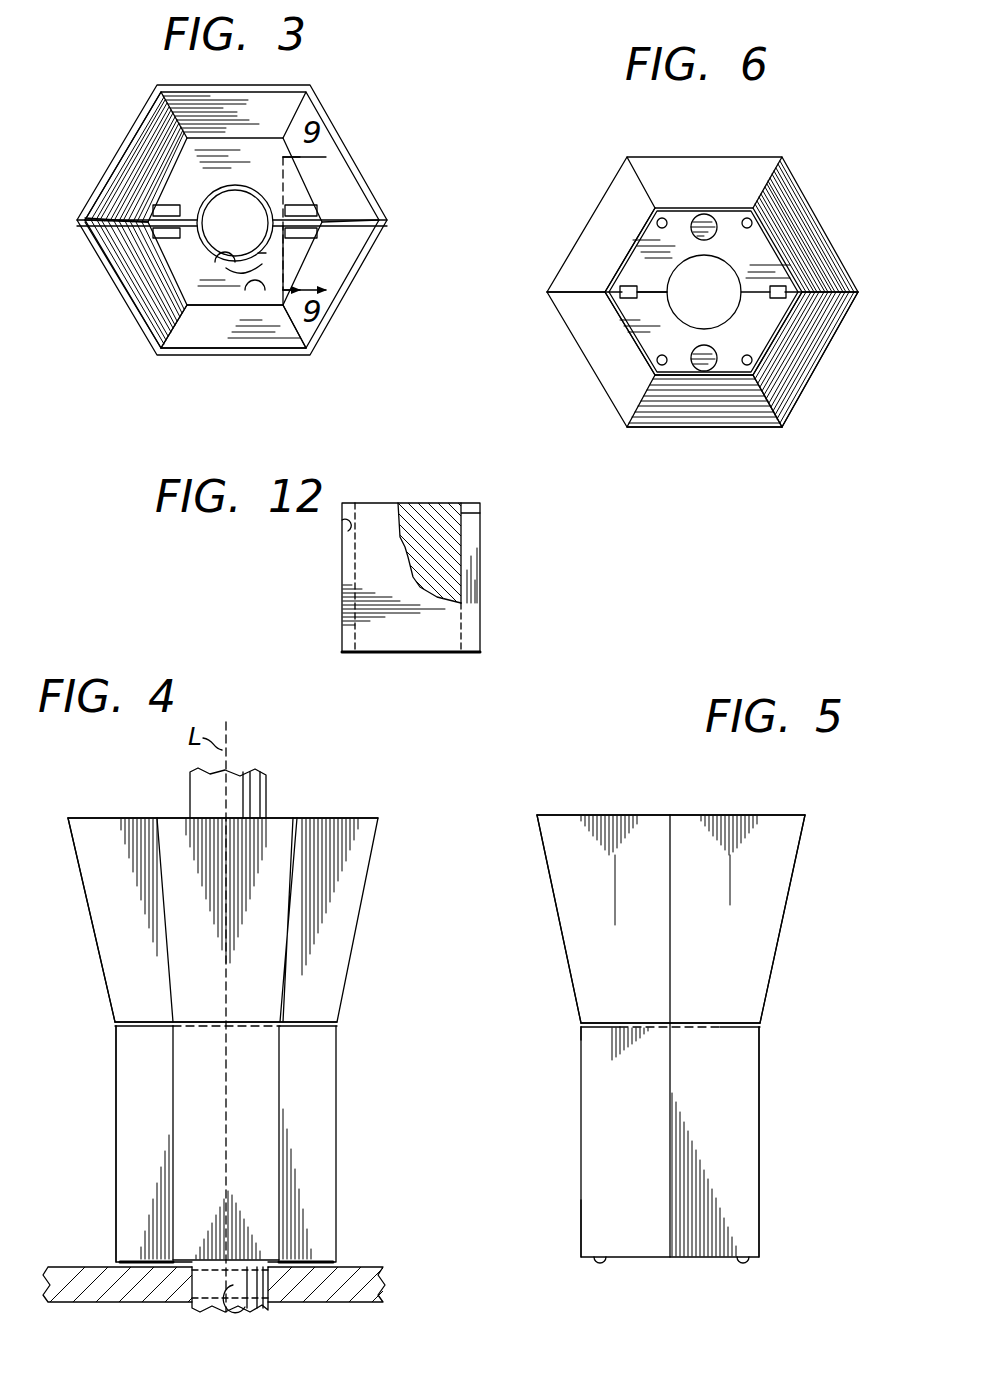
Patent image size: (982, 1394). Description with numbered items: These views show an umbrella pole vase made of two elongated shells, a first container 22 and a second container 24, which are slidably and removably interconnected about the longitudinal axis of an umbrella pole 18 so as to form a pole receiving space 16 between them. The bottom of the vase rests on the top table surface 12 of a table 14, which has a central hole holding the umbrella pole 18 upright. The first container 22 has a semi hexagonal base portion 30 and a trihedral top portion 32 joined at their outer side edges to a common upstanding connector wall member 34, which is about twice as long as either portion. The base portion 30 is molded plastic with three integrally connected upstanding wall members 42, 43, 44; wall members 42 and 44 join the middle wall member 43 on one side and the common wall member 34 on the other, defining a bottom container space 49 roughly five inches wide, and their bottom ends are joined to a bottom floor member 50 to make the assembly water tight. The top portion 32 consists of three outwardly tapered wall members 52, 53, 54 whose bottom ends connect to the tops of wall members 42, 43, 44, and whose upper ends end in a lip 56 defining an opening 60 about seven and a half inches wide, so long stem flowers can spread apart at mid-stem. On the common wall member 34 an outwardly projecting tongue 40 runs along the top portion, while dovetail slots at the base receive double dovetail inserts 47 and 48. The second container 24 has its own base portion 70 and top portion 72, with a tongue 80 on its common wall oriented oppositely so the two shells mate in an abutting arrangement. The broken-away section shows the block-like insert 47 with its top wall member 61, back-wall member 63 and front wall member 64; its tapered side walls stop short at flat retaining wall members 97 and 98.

In FIG. 4, the top table surface 12 is at (368, 1275).
In FIG. 4, the table 14 is at (85, 1277).
In FIG. 4, the pole receiving space 16 is at (240, 1300).
In FIG. 4, the umbrella pole 18 is at (265, 795).
In FIG. 3, the first elongated container 22 is at (332, 338).
In FIG. 6, the first elongated container 22 is at (770, 452).
In FIG. 4, the first elongated container 22 is at (357, 1005).
In FIG. 5, the first elongated container 22 is at (558, 972).
In FIG. 3, the second elongated container 24 is at (140, 85).
In FIG. 6, the second elongated container 24 is at (590, 185).
In FIG. 5, the second elongated container 24 is at (810, 822).
In FIG. 6, the semi hexagonal base portion 30 is at (800, 318).
In FIG. 4, the semi hexagonal base portion 30 is at (348, 1085).
In FIG. 5, the semi hexagonal base portion 30 is at (580, 1157).
In FIG. 3, the trihedral top portion 32 is at (115, 332).
In FIG. 6, the trihedral top portion 32 is at (545, 315).
In FIG. 4, the trihedral top portion 32 is at (368, 912).
In FIG. 5, the trihedral top portion 32 is at (548, 910).
In FIG. 3, the common upstanding connector wall member 34 is at (98, 215).
In FIG. 3, the elongated outwardly projecting tongue 40 is at (305, 210).
In FIG. 3, the upstanding wall member 42 is at (175, 275).
In FIG. 6, the upstanding wall member 42 is at (612, 315).
In FIG. 4, the upstanding wall member 42 is at (133, 1157).
In FIG. 3, the upstanding wall member 43 is at (240, 300).
In FIG. 6, the upstanding wall member 43 is at (665, 380).
In FIG. 4, the upstanding wall member 43 is at (190, 1057).
In FIG. 3, the upstanding wall member 44 is at (300, 245).
In FIG. 6, the upstanding wall member 44 is at (770, 360).
In FIG. 4, the upstanding wall member 44 is at (322, 1138).
In FIG. 5, the upstanding wall member 44 is at (605, 1226).
In FIG. 6, the double dovetail insert 47 is at (625, 285).
In FIG. 12, the double dovetail insert 47 is at (410, 660).
In FIG. 6, the double dovetail insert 48 is at (782, 282).
In FIG. 3, the bottom container space 49 is at (235, 223).
In FIG. 3, the bottom floor member 50 is at (330, 250).
In FIG. 3, the outwardly tapered wall member 52 is at (120, 250).
In FIG. 6, the outwardly tapered wall member 52 is at (602, 365).
In FIG. 4, the outwardly tapered wall member 52 is at (127, 958).
In FIG. 3, the outwardly tapered wall member 53 is at (185, 335).
In FIG. 6, the outwardly tapered wall member 53 is at (715, 405).
In FIG. 4, the outwardly tapered wall member 53 is at (180, 873).
In FIG. 3, the outwardly tapered wall member 54 is at (300, 340).
In FIG. 6, the outwardly tapered wall member 54 is at (790, 330).
In FIG. 4, the outwardly tapered wall member 54 is at (365, 815).
In FIG. 5, the outwardly tapered wall member 54 is at (593, 995).
In FIG. 3, the lip 56 is at (258, 356).
In FIG. 4, the lip 56 is at (105, 815).
In FIG. 5, the lip 56 is at (557, 815).
In FIG. 5, the opening 60 is at (633, 805).
In FIG. 12, the top wall member 61 is at (412, 503).
In FIG. 12, the back-wall member 63 is at (343, 626).
In FIG. 12, the front wall member 64 is at (475, 590).
In FIG. 6, the base portion 70 is at (680, 200).
In FIG. 5, the base portion 70 is at (770, 1163).
In FIG. 3, the top portion 72 is at (345, 100).
In FIG. 6, the top portion 72 is at (805, 175).
In FIG. 5, the top portion 72 is at (777, 978).
In FIG. 3, the elongated outwardly projecting tongue 80 is at (172, 206).
In FIG. 12, the flat retaining wall member 97 is at (343, 530).
In FIG. 12, the flat retaining wall member 98 is at (470, 508).